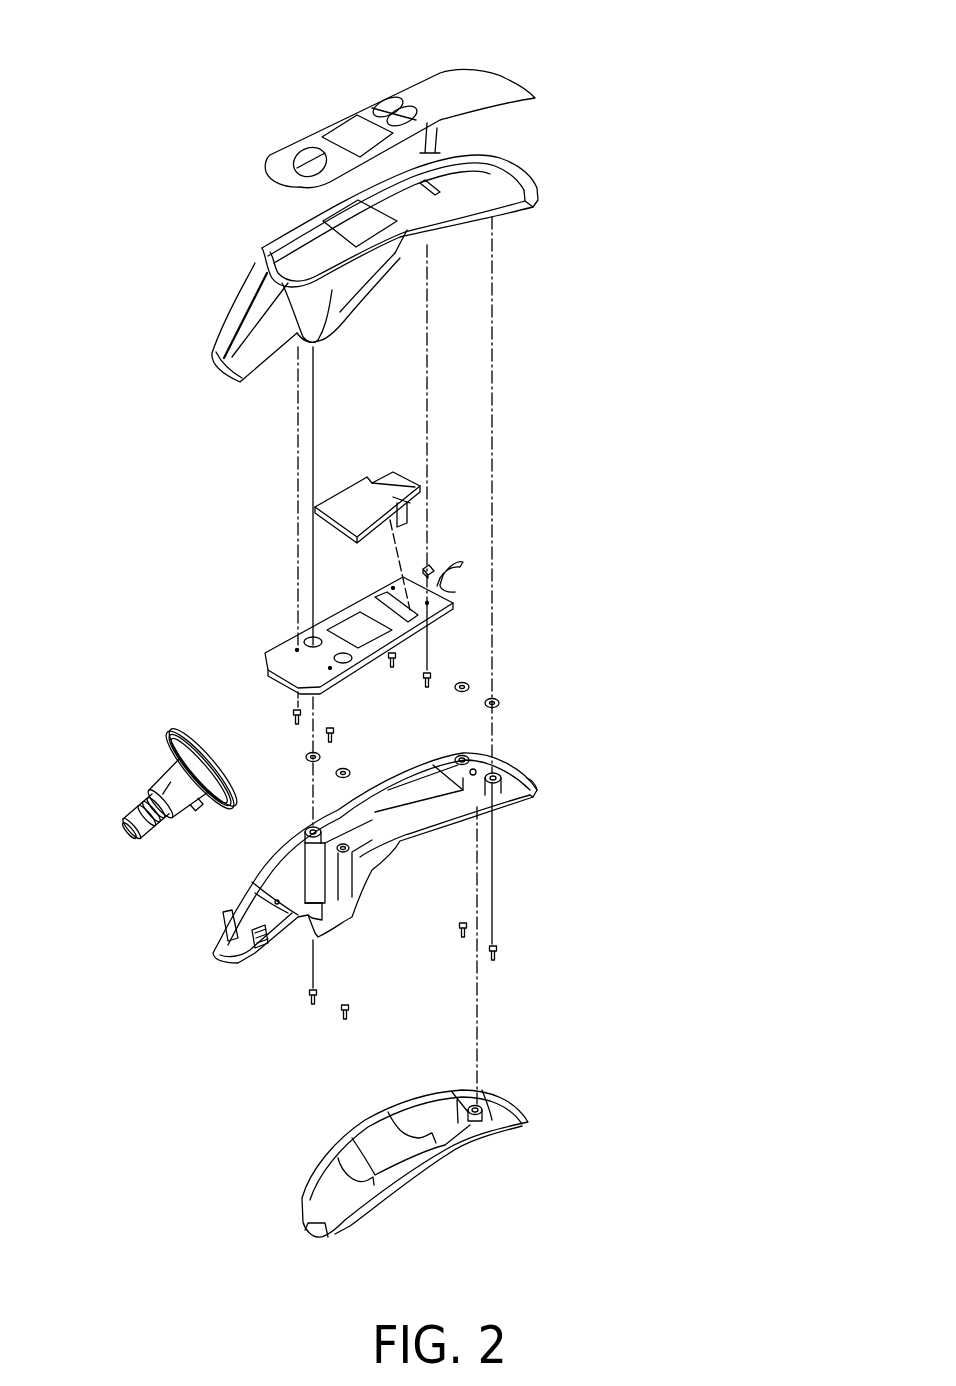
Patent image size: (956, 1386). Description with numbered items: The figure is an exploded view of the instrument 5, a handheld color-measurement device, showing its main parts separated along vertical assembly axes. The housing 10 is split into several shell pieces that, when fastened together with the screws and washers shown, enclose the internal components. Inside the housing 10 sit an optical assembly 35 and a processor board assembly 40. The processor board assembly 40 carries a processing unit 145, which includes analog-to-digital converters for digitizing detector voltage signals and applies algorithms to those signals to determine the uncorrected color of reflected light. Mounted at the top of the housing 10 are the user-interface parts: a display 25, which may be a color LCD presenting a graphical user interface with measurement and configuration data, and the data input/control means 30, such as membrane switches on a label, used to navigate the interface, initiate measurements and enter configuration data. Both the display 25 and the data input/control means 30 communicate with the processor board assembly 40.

The instrument 5 is at (103, 166).
The housing 10 is at (508, 181).
The display 25 is at (388, 503).
The data input/control means 30 is at (407, 115).
The optical assembly 35 is at (167, 732).
The processor board assembly 40 is at (283, 648).
The processing unit 145 is at (372, 632).